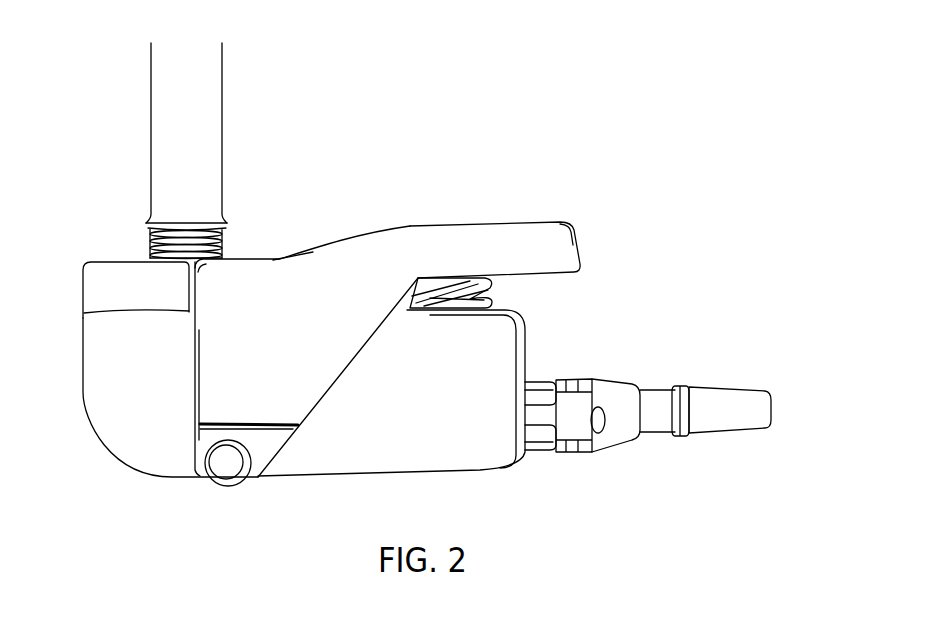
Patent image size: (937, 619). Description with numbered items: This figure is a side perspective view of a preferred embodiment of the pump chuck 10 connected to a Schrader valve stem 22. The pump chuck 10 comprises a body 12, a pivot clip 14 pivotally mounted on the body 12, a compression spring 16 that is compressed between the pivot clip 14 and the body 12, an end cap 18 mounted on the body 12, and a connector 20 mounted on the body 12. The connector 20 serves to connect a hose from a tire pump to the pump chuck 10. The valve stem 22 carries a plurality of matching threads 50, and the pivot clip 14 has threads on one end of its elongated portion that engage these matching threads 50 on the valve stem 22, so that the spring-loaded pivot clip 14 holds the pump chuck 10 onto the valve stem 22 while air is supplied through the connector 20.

The pump chuck 10 is at (433, 174).
The body 12 is at (105, 413).
The pivot clip 14 is at (518, 242).
The compression spring 16 is at (492, 293).
The end cap 18 is at (97, 298).
The connector 20 is at (728, 405).
The valve stem 22 is at (208, 116).
The threads 50 is at (173, 253).